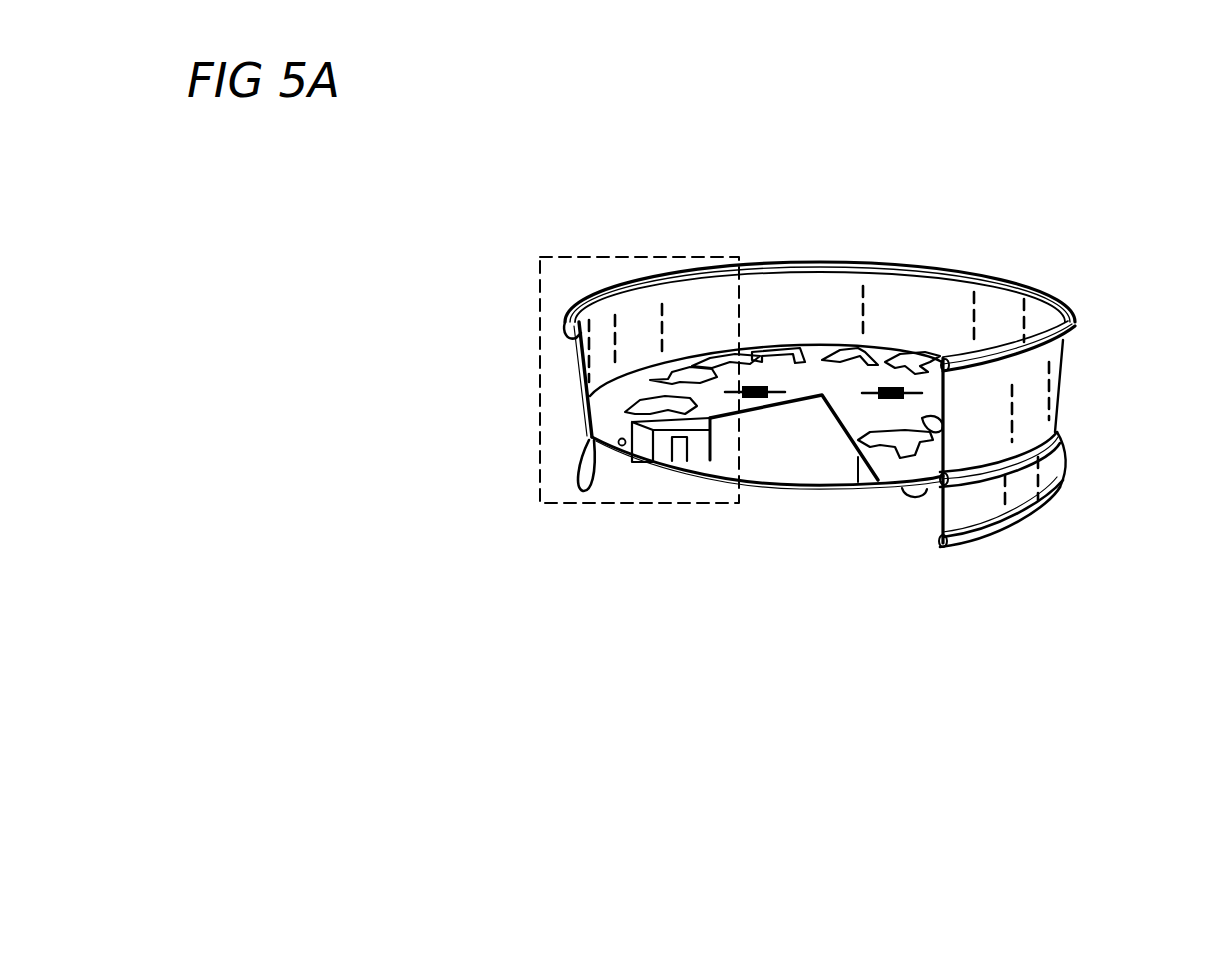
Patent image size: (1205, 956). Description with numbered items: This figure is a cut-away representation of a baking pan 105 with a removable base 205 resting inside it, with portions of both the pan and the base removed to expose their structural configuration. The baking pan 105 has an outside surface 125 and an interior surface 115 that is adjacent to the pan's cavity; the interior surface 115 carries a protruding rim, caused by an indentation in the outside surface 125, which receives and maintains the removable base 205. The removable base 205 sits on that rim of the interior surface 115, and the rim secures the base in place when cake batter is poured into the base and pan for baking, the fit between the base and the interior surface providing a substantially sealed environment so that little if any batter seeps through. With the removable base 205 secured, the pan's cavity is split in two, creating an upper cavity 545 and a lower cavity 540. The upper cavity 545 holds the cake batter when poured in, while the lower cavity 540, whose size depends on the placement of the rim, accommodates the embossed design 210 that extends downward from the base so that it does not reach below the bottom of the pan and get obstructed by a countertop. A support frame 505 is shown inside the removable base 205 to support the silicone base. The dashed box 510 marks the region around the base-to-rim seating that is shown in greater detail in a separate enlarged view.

The box 510 is at (538, 289).
The embossed design 210 is at (757, 350).
The removable base 205 is at (827, 350).
The interior surface 115 is at (847, 293).
The upper cavity 545 is at (943, 307).
The baking pan 105 is at (1076, 316).
The outside surface 125 is at (1064, 366).
The lower cavity 540 is at (783, 503).
The support frame 505 is at (860, 485).